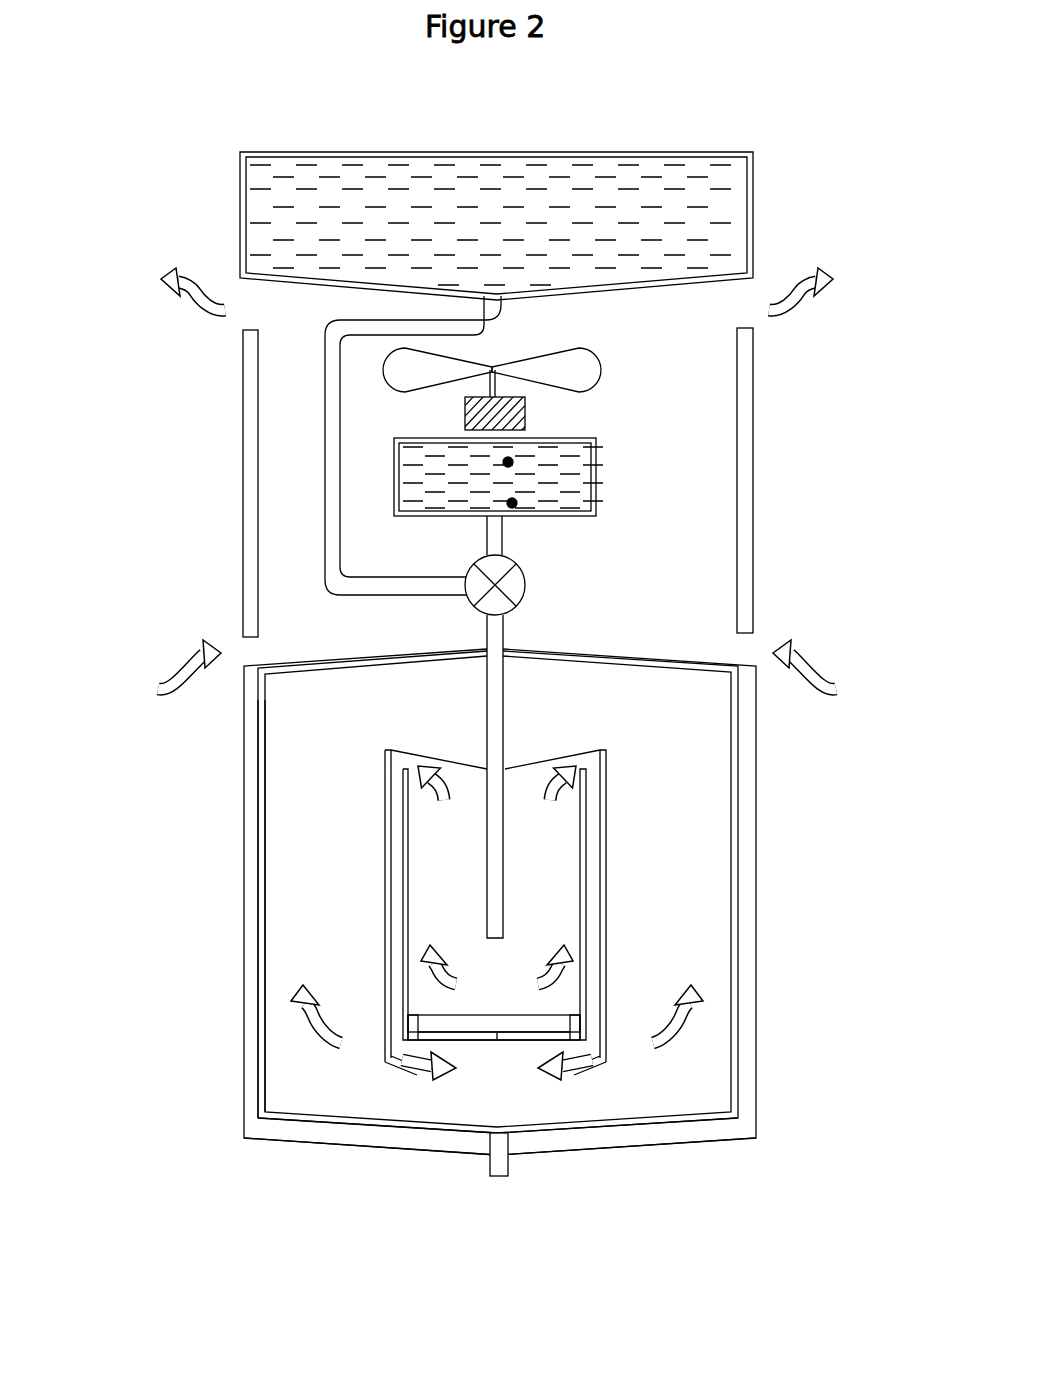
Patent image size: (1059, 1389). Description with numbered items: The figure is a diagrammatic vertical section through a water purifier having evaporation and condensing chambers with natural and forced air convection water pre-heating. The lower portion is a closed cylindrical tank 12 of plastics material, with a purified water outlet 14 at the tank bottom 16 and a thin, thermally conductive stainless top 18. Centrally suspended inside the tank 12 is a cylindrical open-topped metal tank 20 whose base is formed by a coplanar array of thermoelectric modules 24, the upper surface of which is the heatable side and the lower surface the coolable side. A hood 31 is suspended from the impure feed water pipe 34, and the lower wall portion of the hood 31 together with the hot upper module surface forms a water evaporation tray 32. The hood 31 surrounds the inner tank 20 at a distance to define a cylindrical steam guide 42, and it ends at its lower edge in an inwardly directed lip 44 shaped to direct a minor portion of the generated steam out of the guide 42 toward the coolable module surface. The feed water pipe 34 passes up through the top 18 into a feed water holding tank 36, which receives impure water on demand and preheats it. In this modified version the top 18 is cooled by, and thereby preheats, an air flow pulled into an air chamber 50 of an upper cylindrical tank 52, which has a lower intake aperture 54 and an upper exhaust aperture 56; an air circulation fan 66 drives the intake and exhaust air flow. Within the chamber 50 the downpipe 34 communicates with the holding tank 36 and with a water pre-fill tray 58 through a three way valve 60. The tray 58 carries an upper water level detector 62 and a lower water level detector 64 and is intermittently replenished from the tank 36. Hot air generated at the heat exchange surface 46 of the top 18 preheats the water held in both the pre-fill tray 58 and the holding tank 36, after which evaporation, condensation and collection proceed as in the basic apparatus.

The closed cylindrical tank 12 is at (738, 783).
The purified water outlet 14 is at (494, 1172).
The tank bottom 16 is at (342, 1140).
The thermally conductive stainless top 18 is at (703, 659).
The open-topped metal tank 20 is at (553, 840).
The thermoelectric modules 24 is at (518, 1040).
The hood 31 is at (597, 931).
The water evaporation tray 32 is at (553, 1012).
The impure feed water pipe 34 is at (488, 906).
The feed water holding tank 36 is at (753, 166).
The steam guide 42 is at (395, 868).
The inwardly directed lip 44 is at (384, 1060).
The heat exchange surface 46 is at (322, 678).
The air chamber 50 is at (688, 411).
The upper cylindrical tank 52 is at (753, 400).
The lower intake aperture 54 is at (477, 694).
The upper exhaust aperture 56 is at (489, 299).
The water pre-fill tray 58 is at (596, 507).
The three way valve 60 is at (527, 578).
The upper water level detector 62 is at (508, 462).
The lower water level detector 64 is at (512, 503).
The air circulation fan 66 is at (607, 378).